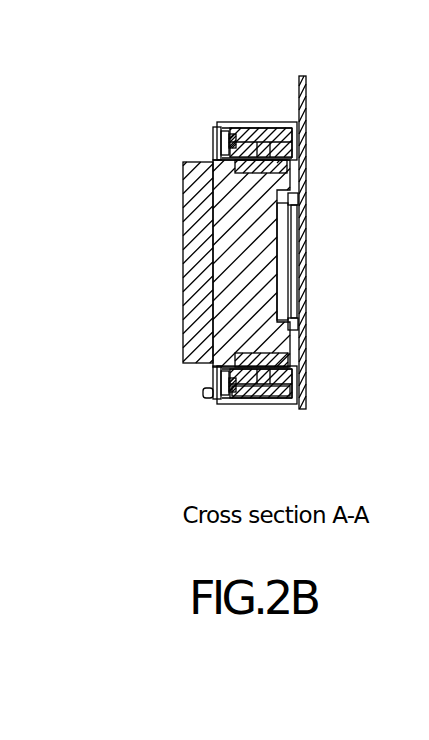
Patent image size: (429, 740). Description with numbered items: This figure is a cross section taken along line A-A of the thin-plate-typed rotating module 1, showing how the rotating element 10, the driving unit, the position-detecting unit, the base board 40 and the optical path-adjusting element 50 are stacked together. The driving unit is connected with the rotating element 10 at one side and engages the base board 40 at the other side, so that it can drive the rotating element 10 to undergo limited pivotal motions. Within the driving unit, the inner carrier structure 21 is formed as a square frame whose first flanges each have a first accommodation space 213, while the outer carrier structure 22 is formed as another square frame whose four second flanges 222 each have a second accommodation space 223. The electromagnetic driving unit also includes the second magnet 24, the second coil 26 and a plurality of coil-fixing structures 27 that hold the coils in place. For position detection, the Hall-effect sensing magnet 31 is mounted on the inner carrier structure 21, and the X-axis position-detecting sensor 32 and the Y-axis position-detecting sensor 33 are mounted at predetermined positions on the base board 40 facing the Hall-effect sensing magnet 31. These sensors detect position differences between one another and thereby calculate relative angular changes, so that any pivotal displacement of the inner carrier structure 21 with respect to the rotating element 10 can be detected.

The thin-plate-typed rotating module 1 is at (97, 90).
The rotating element 10 is at (213, 268).
The inner carrier structure 21 is at (213, 328).
The first accommodation space 213 is at (213, 195).
The outer carrier structure 22 is at (212, 405).
The second flange 222 is at (234, 408).
The second accommodation space 223 is at (264, 127).
The second magnet 24 is at (221, 147).
The second coil 26 is at (228, 137).
The coil-fixing structure 27 is at (236, 134).
The Hall-effect sensing magnet 31 is at (285, 227).
The X-axis position-detecting sensor 32 is at (293, 264).
The Y-axis position-detecting sensor 33 is at (300, 193).
The base board 40 is at (305, 100).
The optical path-adjusting element 50 is at (183, 240).